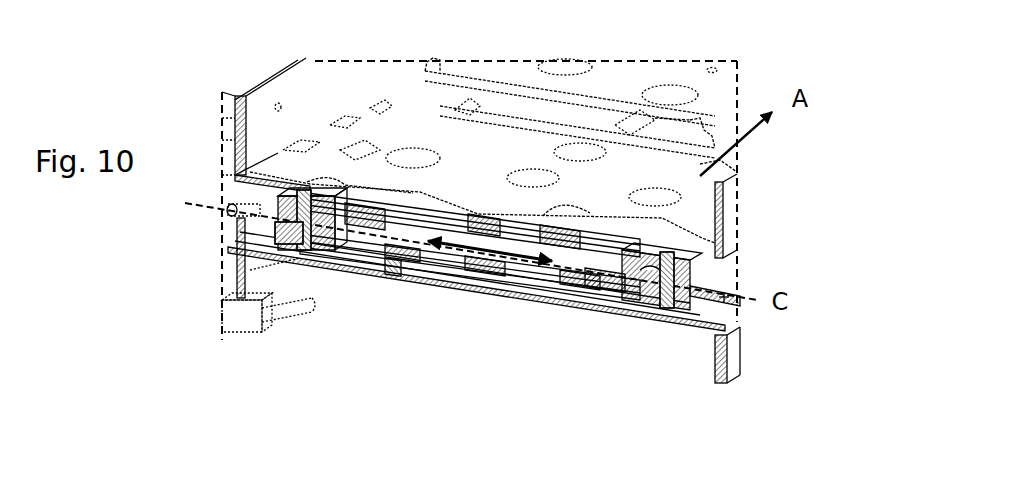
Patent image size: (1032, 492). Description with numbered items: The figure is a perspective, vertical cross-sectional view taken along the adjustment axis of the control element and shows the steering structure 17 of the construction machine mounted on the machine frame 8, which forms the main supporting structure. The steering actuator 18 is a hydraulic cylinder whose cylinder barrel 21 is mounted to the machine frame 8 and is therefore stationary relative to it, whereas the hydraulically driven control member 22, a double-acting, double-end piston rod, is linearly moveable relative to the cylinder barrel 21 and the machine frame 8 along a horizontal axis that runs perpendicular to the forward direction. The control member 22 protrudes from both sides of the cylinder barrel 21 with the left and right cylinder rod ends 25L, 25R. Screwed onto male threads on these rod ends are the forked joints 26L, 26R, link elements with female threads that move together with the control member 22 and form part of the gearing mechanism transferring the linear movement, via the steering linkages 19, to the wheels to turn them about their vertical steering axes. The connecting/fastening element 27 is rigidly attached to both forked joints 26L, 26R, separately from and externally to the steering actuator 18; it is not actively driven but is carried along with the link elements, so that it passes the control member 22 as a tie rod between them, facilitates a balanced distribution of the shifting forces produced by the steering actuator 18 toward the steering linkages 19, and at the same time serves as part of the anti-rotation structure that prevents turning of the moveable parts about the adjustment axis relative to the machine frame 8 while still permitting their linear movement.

The machine frame 8 is at (492, 218).
The steering structure 17 is at (349, 336).
The steering actuator 18 is at (507, 263).
The steering linkages 19 is at (273, 215).
The cylinder barrel 21 is at (437, 215).
The control member 22 is at (480, 221).
The left cylinder rod end 25L is at (363, 227).
The right cylinder rod end 25R is at (605, 286).
The left forked joint 26L is at (327, 245).
The right forked joint 26R is at (637, 298).
The connecting/fastening element 27 is at (413, 277).